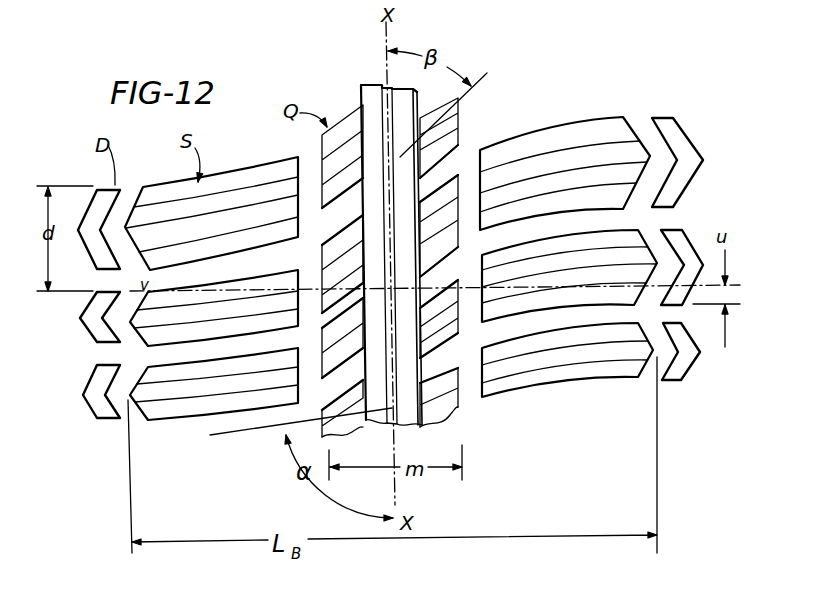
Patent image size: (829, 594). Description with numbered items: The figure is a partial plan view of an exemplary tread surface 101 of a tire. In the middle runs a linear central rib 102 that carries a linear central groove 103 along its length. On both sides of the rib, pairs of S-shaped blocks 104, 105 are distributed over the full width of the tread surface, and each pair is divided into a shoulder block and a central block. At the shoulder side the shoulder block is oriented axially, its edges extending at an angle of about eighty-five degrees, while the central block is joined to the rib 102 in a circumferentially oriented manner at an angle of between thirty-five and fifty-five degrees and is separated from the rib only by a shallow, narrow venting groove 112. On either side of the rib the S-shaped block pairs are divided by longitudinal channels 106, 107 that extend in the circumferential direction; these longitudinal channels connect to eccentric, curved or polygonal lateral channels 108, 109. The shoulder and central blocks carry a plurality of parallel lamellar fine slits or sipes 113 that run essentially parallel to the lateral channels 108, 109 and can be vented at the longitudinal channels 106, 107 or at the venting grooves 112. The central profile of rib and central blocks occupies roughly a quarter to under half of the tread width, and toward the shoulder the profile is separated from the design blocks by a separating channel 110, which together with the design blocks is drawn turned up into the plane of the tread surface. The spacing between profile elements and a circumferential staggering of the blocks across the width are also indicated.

The tread surface 101 is at (473, 58).
The central rib 102 is at (372, 93).
The central groove 103 is at (398, 384).
The S-shaped block pair 104 is at (158, 327).
The S-shaped block pair 105 is at (630, 250).
The longitudinal channel 106 is at (310, 163).
The longitudinal channel 107 is at (471, 170).
The lateral channel 108 is at (192, 358).
The lateral channel 109 is at (577, 318).
The separating channel 110 is at (133, 197).
The venting groove 112 is at (355, 107).
The sipes 113 is at (232, 393).